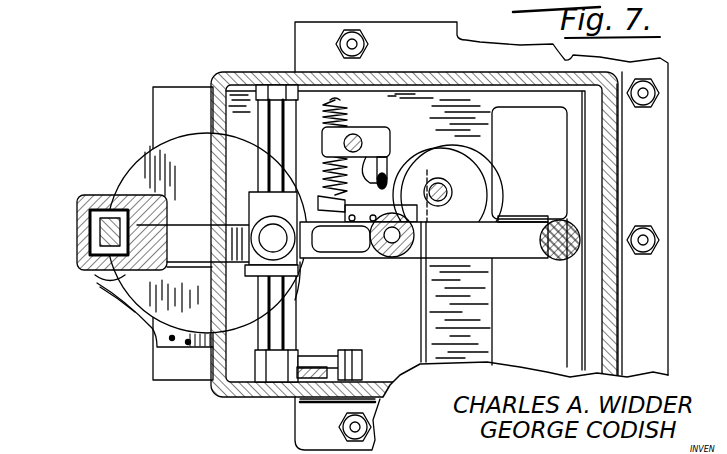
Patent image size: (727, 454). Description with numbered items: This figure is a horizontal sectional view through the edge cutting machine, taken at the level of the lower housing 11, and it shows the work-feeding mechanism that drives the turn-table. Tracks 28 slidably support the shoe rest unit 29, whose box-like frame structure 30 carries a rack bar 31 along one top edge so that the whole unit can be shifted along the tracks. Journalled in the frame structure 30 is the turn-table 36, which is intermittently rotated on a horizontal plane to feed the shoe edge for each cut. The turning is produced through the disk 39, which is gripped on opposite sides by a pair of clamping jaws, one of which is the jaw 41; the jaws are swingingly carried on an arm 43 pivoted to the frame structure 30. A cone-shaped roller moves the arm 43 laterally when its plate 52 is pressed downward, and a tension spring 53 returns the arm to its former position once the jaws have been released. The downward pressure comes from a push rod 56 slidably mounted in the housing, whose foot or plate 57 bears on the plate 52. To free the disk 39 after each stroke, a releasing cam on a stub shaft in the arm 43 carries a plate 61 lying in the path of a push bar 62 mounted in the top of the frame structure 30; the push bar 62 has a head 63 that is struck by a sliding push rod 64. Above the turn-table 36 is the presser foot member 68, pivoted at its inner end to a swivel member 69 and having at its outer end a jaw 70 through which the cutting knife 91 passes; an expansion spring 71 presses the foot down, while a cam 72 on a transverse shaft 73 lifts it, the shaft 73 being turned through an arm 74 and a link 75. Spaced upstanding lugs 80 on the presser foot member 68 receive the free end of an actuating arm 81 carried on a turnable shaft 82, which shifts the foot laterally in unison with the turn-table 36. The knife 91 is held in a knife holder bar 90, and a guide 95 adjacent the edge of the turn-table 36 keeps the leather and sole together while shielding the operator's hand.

The lower housing 11 is at (613, 173).
The tracks 28 is at (620, 100).
The shoe rest unit 29 is at (170, 118).
The box-like frame structure 30 is at (528, 103).
The rack bar 31 is at (545, 363).
The turn-table 36 is at (137, 163).
The disk 39 is at (303, 287).
The clamping jaw 41 is at (324, 180).
The arm 43 is at (506, 215).
The disk or plate 52 is at (488, 173).
The tension spring 53 is at (360, 130).
The push rod 56 is at (441, 183).
The foot or plate 57 is at (467, 185).
The plate 61 is at (388, 168).
The push bar 62 is at (438, 182).
The head 63 is at (338, 136).
The sliding push rod 64 is at (361, 141).
The presser foot member 68 is at (424, 240).
The swivel member 69 is at (572, 222).
The jaw 70 is at (78, 253).
The expansion spring 71 is at (251, 222).
The cam 72 is at (250, 198).
The transverse shaft 73 is at (273, 332).
The arm 74 is at (310, 358).
The link 75 is at (318, 399).
The upstanding lugs 80 is at (322, 252).
The actuating arm 81 is at (370, 252).
The turnable shaft 82 is at (395, 253).
The knife holder bar 90 is at (93, 272).
The cutting knife 91 is at (92, 229).
The guide 95 is at (130, 310).